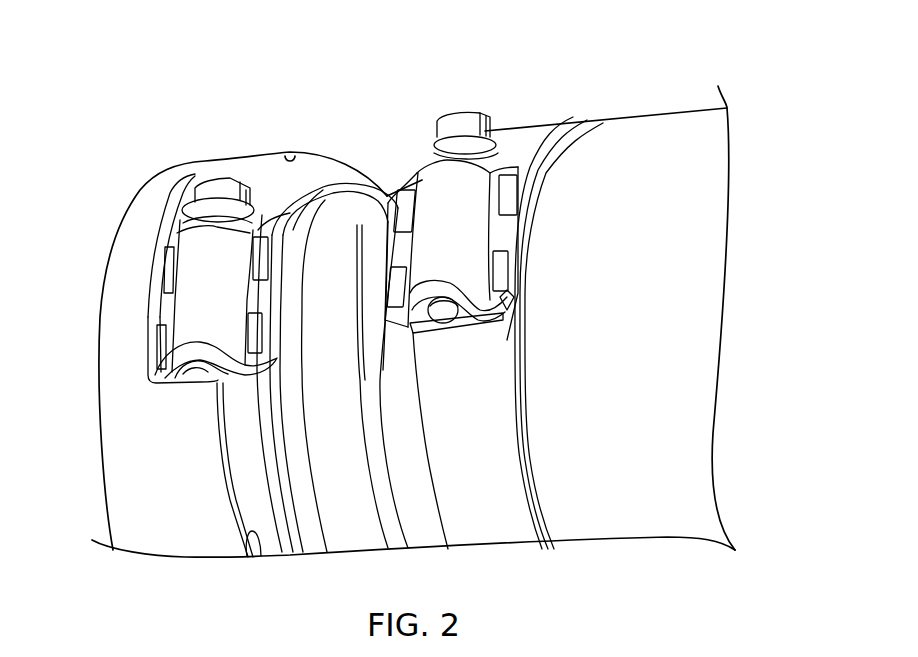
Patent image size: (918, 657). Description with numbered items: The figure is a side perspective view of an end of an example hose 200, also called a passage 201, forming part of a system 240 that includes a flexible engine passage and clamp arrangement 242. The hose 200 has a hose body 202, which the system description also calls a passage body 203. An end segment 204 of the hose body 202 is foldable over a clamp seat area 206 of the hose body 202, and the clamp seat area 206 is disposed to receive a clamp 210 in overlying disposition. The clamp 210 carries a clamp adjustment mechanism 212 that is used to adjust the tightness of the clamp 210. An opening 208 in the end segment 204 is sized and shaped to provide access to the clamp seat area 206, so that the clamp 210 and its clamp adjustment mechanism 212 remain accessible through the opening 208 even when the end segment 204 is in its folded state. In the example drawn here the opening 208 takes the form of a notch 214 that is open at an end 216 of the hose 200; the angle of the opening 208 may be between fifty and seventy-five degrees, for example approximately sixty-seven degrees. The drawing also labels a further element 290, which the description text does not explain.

The hose 200 is at (454, 321).
The passage 201 is at (720, 162).
The hose body 202 is at (641, 272).
The passage body 203 is at (641, 309).
The end segment 204 is at (177, 545).
The clamp seat area 206 is at (300, 180).
The opening 208 is at (233, 163).
The clamp 210 is at (273, 545).
The clamp adjustment mechanism 212 is at (220, 188).
The notch 214 is at (173, 380).
The end 216 is at (258, 557).
The system 240 is at (710, 60).
The flexible engine passage and clamp arrangement 242 is at (102, 565).
The second connector 290 is at (524, 74).